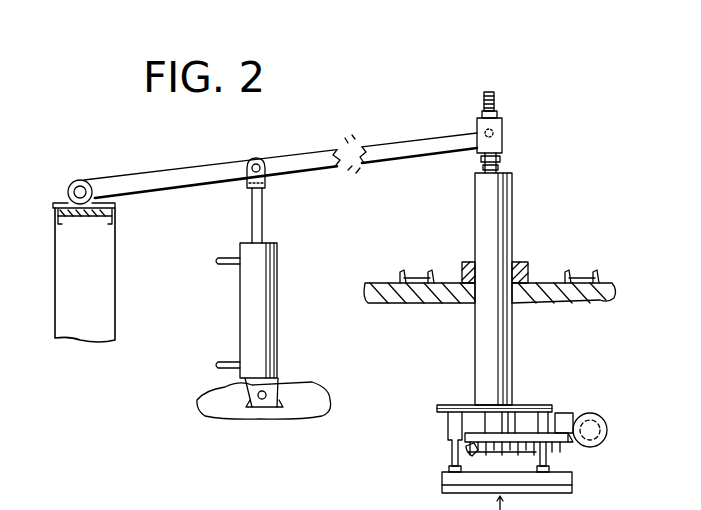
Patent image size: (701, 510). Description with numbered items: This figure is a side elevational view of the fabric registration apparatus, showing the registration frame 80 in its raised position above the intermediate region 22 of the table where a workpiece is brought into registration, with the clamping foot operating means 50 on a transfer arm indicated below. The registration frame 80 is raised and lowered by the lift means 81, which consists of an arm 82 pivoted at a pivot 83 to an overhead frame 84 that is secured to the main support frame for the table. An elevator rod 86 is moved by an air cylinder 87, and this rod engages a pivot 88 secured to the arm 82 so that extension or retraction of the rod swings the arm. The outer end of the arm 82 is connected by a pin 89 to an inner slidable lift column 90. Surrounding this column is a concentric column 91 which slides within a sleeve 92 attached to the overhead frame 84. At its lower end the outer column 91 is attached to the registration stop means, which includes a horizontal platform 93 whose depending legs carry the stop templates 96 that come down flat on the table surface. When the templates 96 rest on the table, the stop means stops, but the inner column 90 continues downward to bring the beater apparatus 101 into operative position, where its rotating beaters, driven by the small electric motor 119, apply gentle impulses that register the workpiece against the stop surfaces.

The intermediate region 22 is at (600, 509).
The operating means 50 is at (345, 509).
The registration frame 80 is at (568, 393).
The lift means 81 is at (330, 106).
The arm 82 is at (297, 160).
The pivot 83 is at (69, 192).
The overhead frame 84 is at (66, 299).
The elevator rod 86 is at (254, 211).
The air cylinder 87 is at (266, 318).
The pivot 88 is at (258, 163).
The pin 89 is at (503, 130).
The inner slidable lift column 90 is at (497, 167).
The concentric column 91 is at (488, 209).
The sleeve 92 is at (521, 262).
The horizontal platform 93 is at (527, 405).
The stop template 96 is at (530, 493).
The beater apparatus 101 is at (472, 432).
The electric motor 119 is at (600, 419).